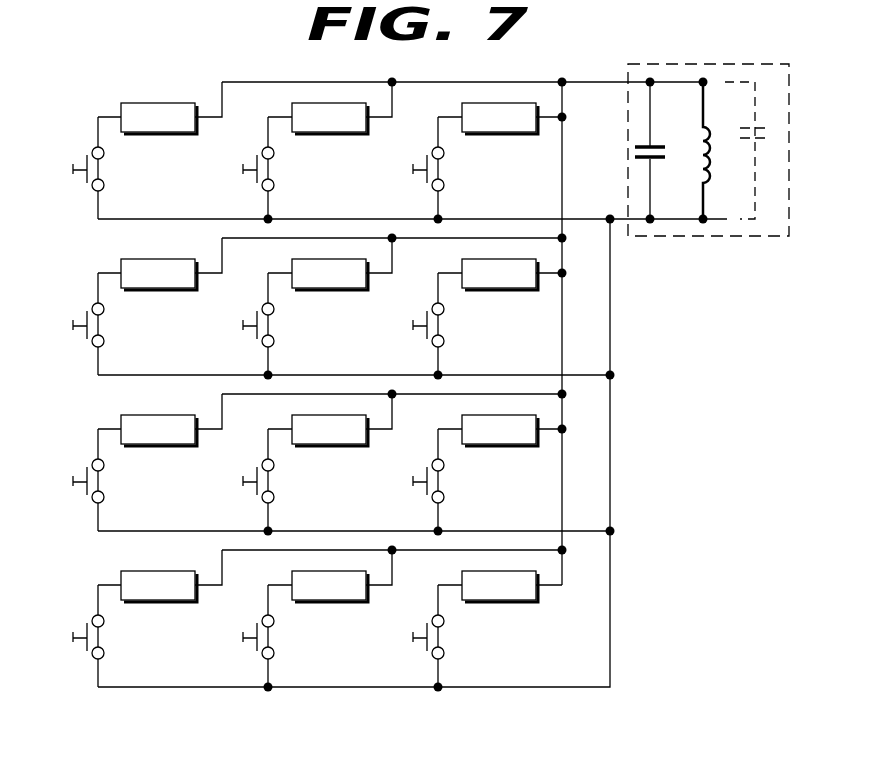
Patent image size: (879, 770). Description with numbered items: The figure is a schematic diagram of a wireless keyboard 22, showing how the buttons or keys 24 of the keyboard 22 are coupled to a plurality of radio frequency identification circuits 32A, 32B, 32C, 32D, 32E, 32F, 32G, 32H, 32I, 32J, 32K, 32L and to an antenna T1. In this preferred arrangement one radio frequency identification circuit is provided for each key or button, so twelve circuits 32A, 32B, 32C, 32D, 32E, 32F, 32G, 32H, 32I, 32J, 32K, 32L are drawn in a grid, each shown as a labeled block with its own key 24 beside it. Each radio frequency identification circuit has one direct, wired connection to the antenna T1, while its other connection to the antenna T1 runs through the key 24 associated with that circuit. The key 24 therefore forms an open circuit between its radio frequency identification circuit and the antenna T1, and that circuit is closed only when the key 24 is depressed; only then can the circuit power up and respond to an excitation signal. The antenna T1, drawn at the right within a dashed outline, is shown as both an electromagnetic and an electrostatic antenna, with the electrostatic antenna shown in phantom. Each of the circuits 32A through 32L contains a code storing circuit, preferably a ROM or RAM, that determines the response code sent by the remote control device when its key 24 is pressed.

The keyboard 22 is at (197, 92).
The keys 24 is at (80, 182).
The radio frequency identification circuit 32A is at (176, 133).
The radio frequency identification circuit 32B is at (346, 133).
The radio frequency identification circuit 32C is at (516, 133).
The radio frequency identification circuit 32D is at (176, 289).
The radio frequency identification circuit 32E is at (346, 289).
The radio frequency identification circuit 32F is at (516, 289).
The radio frequency identification circuit 32G is at (176, 445).
The radio frequency identification circuit 32H is at (346, 445).
The radio frequency identification circuit 32I is at (516, 445).
The radio frequency identification circuit 32J is at (176, 601).
The radio frequency identification circuit 32K is at (346, 601).
The radio frequency identification circuit 32L is at (516, 601).
The antenna T1 is at (680, 238).